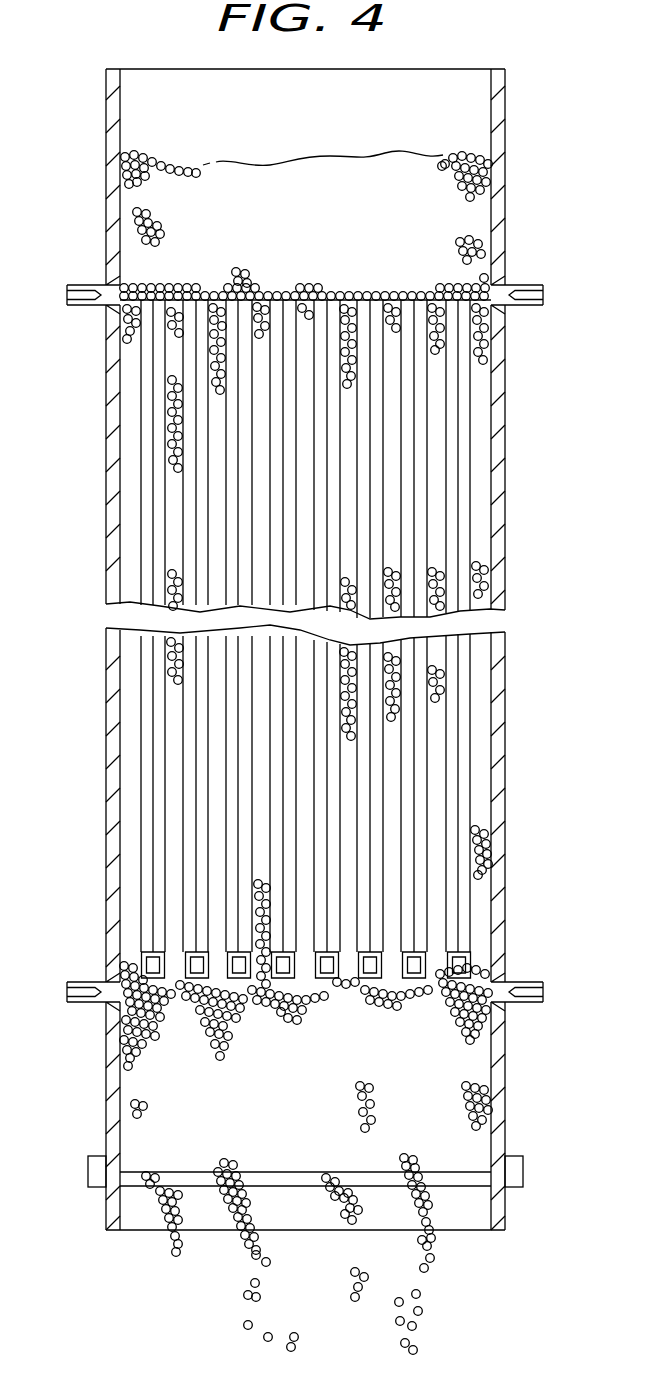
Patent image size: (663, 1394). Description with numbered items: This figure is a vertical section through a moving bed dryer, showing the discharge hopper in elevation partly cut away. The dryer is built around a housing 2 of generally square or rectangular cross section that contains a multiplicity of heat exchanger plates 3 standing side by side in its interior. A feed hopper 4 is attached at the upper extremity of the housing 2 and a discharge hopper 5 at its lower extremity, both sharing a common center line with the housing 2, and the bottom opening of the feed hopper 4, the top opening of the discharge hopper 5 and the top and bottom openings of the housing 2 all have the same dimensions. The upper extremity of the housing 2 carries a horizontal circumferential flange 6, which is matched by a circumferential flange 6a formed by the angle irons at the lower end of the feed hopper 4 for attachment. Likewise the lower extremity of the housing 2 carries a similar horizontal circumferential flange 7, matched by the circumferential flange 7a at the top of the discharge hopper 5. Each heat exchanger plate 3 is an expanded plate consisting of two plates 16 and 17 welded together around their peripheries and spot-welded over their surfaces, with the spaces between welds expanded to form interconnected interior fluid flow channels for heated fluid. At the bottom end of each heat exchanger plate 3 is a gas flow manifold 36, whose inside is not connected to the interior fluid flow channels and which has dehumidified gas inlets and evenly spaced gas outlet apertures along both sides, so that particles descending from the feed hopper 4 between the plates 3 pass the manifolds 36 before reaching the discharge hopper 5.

The housing 2 is at (505, 575).
The heat exchanger plate 3 is at (470, 728).
The feed hopper 4 is at (505, 198).
The discharge hopper 5 is at (505, 1110).
The horizontal circumferential flange 6 is at (533, 305).
The circumferential flange 6a is at (528, 285).
The horizontal circumferential flange 7 is at (543, 985).
The circumferential flange 7a is at (543, 1000).
The plate 16 is at (470, 455).
The plate 17 is at (452, 528).
The gas flow manifold 36 is at (142, 952).